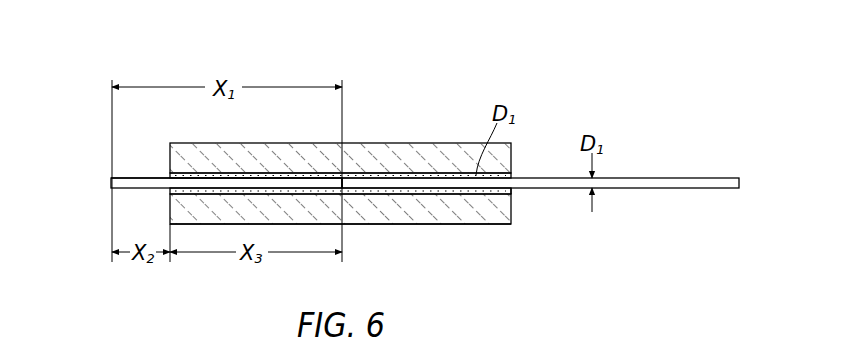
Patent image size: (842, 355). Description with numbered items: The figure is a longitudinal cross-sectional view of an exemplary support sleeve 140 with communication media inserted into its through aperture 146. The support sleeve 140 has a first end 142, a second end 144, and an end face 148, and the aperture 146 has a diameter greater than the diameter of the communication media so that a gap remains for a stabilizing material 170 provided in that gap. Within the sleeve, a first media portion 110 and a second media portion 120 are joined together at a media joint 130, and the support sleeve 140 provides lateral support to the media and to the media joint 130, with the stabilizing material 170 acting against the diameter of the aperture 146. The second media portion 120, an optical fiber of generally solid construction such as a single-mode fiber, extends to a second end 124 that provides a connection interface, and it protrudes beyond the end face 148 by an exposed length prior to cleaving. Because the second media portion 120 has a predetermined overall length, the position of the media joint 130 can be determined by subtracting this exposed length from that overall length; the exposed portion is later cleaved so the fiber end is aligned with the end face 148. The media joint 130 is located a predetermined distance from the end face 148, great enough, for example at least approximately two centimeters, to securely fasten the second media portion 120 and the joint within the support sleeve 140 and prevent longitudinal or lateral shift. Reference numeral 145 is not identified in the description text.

The first media portion 110 is at (624, 182).
The second media portion 120 is at (153, 176).
The second end 124 is at (111, 177).
The media joint 130 is at (350, 180).
The support sleeve 140 is at (440, 143).
The first end 142 is at (212, 224).
The second end 144 is at (470, 224).
The splice protector portion 145 is at (322, 224).
The through aperture 146 is at (511, 190).
The end face 148 is at (512, 153).
The stabilizing material 170 is at (486, 193).